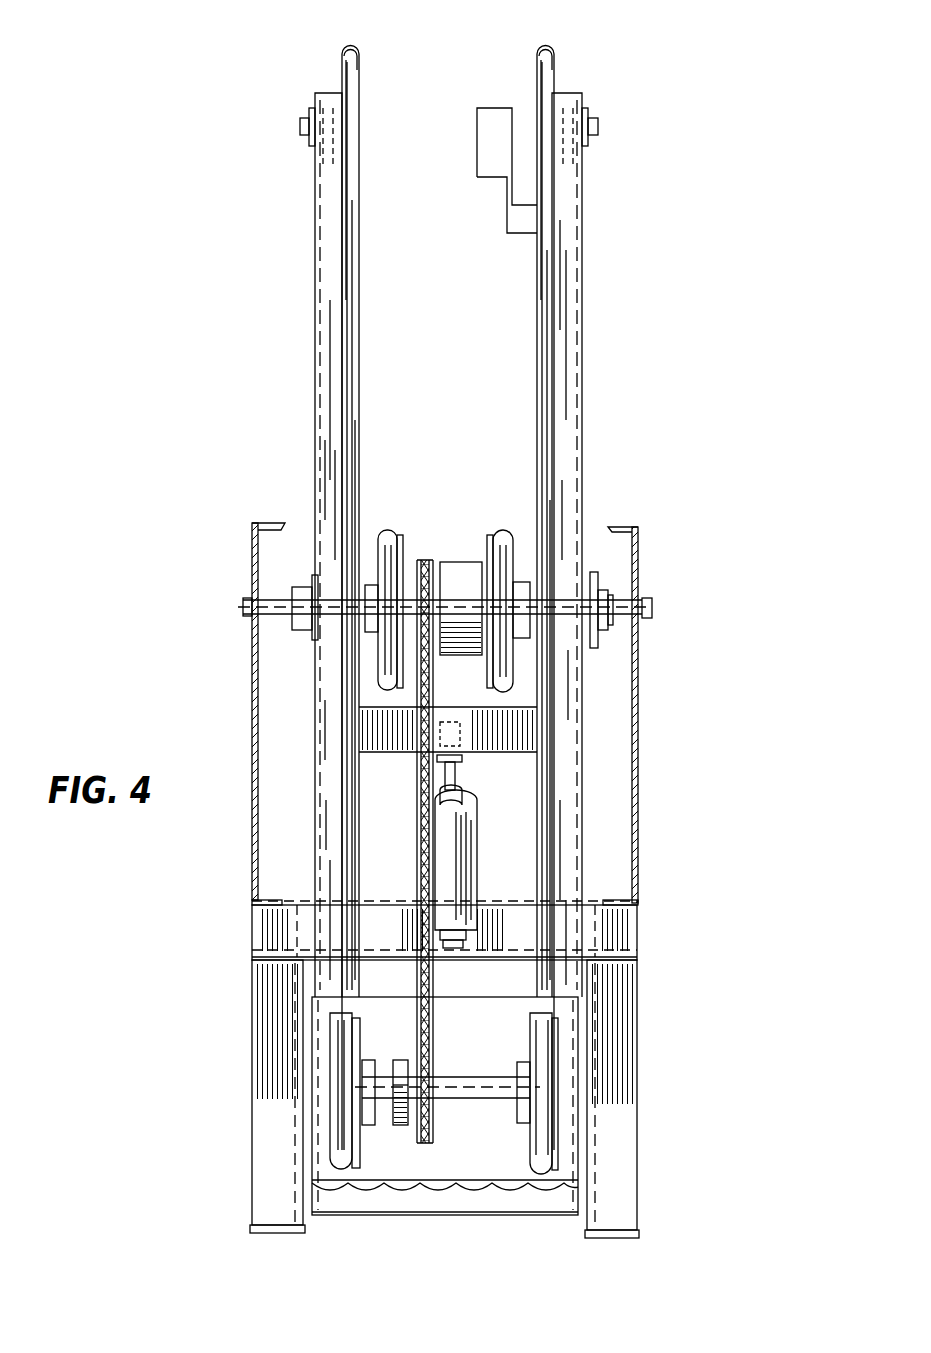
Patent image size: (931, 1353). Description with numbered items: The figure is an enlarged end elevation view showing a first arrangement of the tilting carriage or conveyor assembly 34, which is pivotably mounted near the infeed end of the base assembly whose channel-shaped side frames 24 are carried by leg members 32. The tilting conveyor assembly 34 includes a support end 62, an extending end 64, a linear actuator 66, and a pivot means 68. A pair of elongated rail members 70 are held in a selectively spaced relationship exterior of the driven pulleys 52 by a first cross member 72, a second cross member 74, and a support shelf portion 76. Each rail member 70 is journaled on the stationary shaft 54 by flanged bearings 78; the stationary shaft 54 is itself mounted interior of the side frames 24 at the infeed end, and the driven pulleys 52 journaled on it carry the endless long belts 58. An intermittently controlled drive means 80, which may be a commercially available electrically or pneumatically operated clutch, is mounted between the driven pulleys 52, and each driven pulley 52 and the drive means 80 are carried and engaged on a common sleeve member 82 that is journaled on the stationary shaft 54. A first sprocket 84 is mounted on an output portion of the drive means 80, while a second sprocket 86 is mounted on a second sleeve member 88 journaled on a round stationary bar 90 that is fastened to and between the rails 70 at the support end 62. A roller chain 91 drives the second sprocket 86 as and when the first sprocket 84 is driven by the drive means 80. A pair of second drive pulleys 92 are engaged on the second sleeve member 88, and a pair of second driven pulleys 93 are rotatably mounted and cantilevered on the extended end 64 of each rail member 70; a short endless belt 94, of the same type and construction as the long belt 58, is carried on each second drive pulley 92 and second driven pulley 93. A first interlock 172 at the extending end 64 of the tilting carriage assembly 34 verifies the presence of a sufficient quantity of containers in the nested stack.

The side frame 24 is at (260, 522).
The leg member 32 is at (640, 1118).
The tilting carriage assembly 34 is at (180, 390).
The driven pulley 52 is at (380, 540).
The stationary shaft 54 is at (275, 592).
The long belt 58 is at (400, 535).
The support end 62 is at (511, 1222).
The extending end 64 is at (628, 193).
The linear actuator 66 is at (478, 850).
The pivot means 68 is at (626, 600).
The rail member 70 is at (316, 312).
The first cross member 72 is at (520, 705).
The second cross member 74 is at (470, 1000).
The support shelf portion 76 is at (424, 1172).
The flanged bearing 78 is at (292, 630).
The intermittently controlled drive means 80 is at (470, 562).
The common sleeve member 82 is at (490, 598).
The first sprocket 84 is at (433, 562).
The second sprocket 86 is at (433, 1140).
The second sleeve member 88 is at (493, 1072).
The round stationary bar 90 is at (568, 1082).
The roller chain 91 is at (416, 820).
The second drive pulley 92 is at (360, 1170).
The second driven pulley 93 is at (360, 50).
The short endless belt 94 is at (358, 284).
The first interlock 172 is at (477, 122).